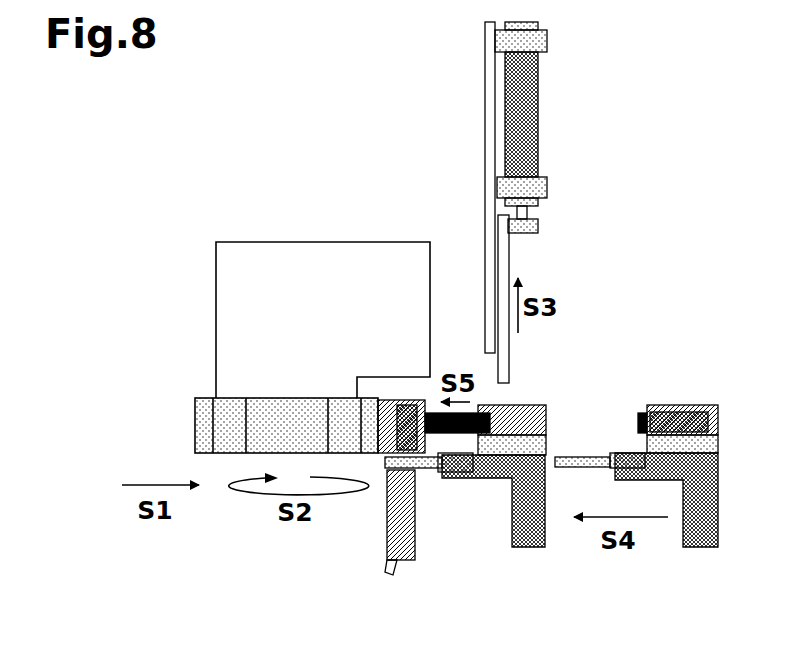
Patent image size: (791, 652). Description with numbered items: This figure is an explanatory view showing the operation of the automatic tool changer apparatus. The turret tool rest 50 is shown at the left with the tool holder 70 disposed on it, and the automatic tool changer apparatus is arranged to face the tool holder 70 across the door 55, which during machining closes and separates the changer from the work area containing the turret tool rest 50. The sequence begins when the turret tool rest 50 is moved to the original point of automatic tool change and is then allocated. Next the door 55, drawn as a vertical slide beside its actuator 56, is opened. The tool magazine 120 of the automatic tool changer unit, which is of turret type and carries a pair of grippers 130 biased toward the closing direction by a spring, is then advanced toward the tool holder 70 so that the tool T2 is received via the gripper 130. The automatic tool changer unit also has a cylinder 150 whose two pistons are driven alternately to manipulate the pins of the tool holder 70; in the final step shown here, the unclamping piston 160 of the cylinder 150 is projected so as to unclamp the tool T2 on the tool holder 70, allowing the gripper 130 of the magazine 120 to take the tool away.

The turret tool rest 50 is at (268, 430).
The door 55 is at (505, 260).
The vertical drive actuator 56 is at (527, 125).
The tool holder 70 is at (385, 455).
The tool magazine 120 is at (497, 473).
The gripper 130 is at (427, 467).
The cylinder 150 is at (547, 421).
The unclamping piston 160 is at (482, 410).
The tool T2 is at (393, 530).